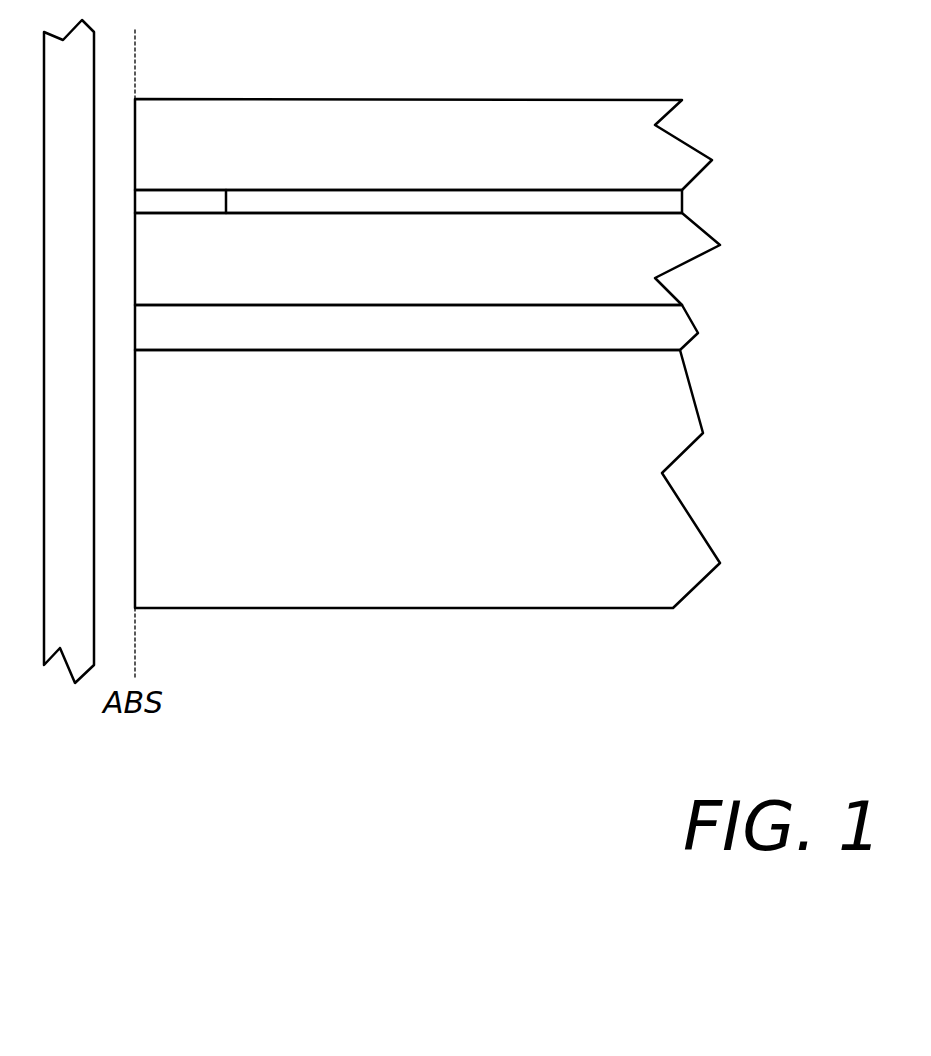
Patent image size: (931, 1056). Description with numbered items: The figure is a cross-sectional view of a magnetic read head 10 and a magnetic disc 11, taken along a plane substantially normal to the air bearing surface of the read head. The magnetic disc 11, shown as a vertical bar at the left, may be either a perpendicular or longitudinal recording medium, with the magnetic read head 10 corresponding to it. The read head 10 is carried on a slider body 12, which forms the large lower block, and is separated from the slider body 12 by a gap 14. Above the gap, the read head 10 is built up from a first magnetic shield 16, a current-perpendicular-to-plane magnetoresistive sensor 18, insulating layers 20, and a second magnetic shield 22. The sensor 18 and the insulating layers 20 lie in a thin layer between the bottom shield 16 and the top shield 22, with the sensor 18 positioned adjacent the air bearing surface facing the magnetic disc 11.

The magnetic read head 10 is at (474, 324).
The magnetic disc 11 is at (69, 351).
The slider body 12 is at (225, 489).
The gap 14 is at (210, 343).
The first magnetic shield 16 is at (210, 272).
The current-perpendicular-to-plane magnetoresistive sensor 18 is at (142, 200).
The insulating layers 20 is at (323, 203).
The second magnetic shield 22 is at (227, 153).